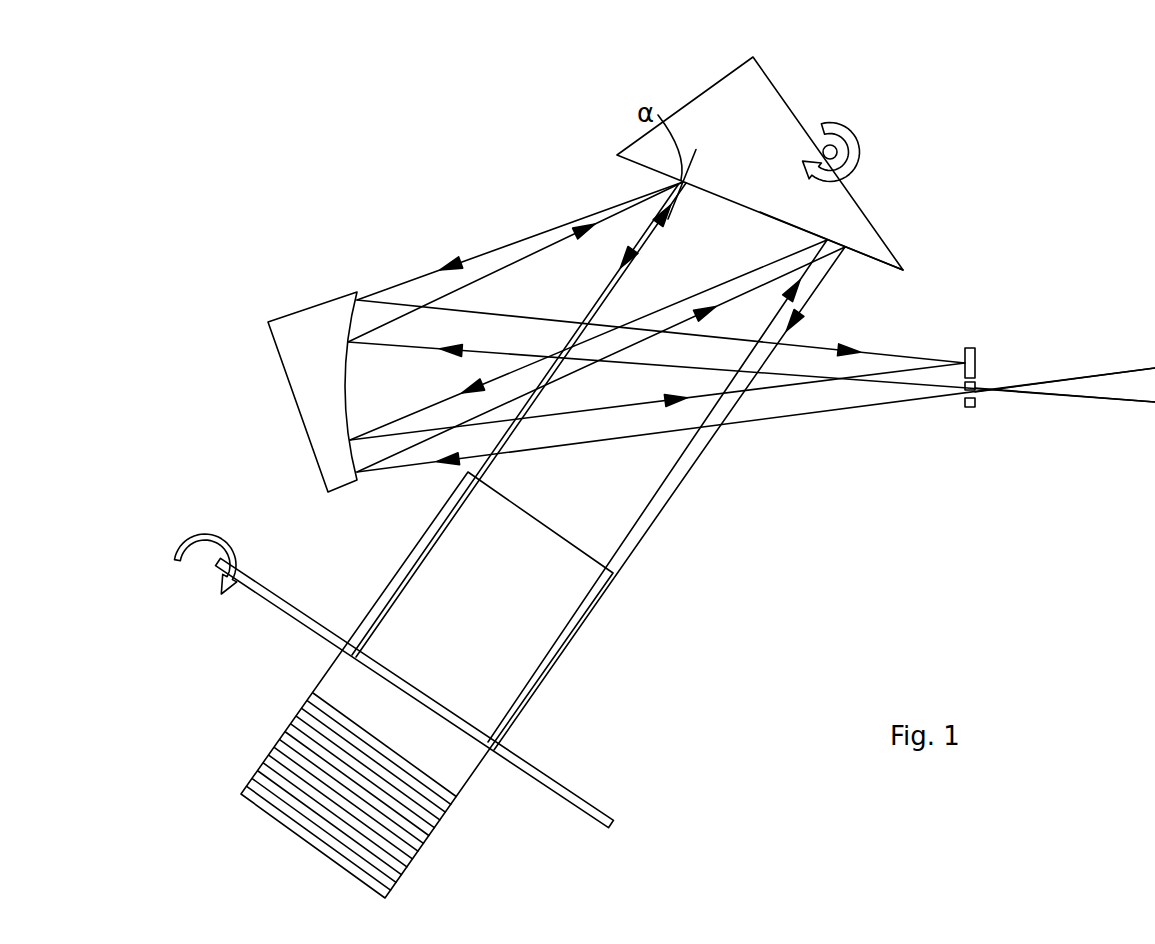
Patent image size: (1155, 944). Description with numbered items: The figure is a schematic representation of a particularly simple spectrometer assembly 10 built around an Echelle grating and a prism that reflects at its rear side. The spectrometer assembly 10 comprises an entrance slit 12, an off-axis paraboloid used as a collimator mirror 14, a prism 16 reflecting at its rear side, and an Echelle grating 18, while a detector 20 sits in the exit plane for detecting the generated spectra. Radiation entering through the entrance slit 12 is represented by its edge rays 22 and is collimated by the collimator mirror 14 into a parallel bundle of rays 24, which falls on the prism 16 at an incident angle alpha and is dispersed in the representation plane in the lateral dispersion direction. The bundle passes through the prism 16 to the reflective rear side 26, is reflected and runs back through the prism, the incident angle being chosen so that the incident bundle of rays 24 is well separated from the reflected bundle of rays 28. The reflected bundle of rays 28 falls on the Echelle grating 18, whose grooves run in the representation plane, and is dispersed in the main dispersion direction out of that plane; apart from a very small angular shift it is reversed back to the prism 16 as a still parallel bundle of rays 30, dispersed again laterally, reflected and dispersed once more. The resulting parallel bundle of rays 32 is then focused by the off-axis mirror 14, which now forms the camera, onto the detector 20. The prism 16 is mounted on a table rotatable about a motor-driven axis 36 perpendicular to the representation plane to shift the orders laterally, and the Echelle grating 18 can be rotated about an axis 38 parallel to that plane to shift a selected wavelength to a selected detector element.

The spectrometer assembly 10 is at (544, 131).
The entrance slit 12 is at (965, 397).
The collimator mirror 14 is at (310, 383).
The prism 16 is at (753, 118).
The Echelle grating 18 is at (455, 742).
The detector 20 is at (970, 362).
The edge rays 22 is at (1027, 385).
The parallel bundle of rays 24 is at (528, 255).
The reflective rear side 26 is at (882, 233).
The reflected bundle of rays 28 is at (677, 487).
The parallel bundle of rays 30 is at (690, 437).
The parallel bundle of rays 32 is at (420, 276).
The axis 36 is at (838, 152).
The axis 38 is at (325, 633).